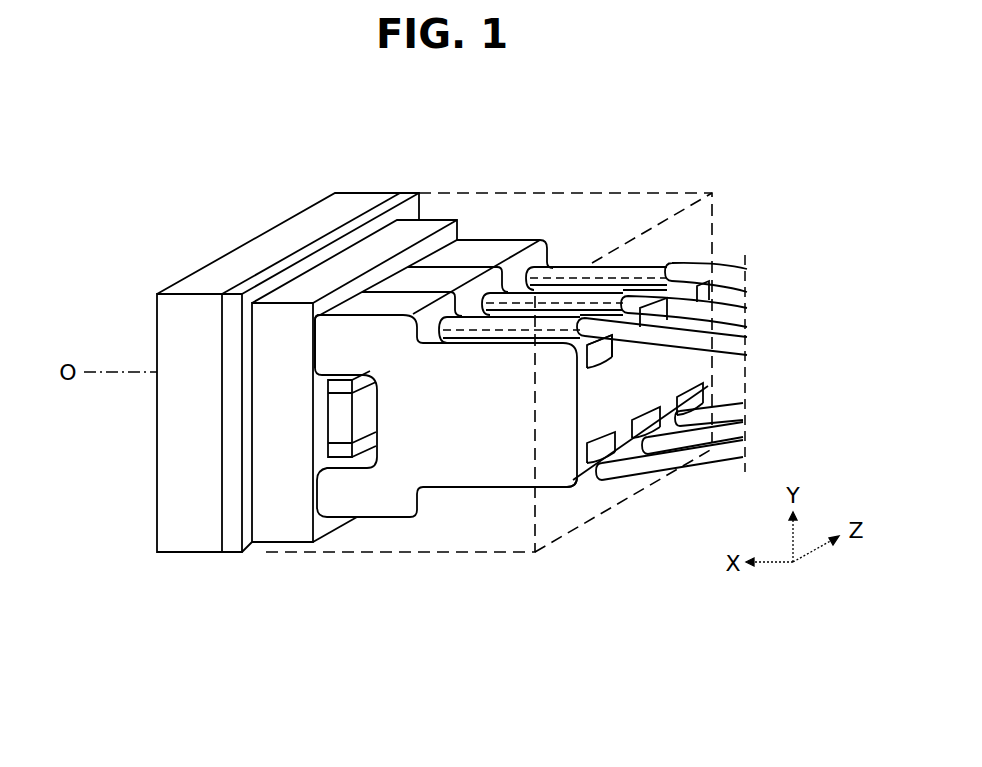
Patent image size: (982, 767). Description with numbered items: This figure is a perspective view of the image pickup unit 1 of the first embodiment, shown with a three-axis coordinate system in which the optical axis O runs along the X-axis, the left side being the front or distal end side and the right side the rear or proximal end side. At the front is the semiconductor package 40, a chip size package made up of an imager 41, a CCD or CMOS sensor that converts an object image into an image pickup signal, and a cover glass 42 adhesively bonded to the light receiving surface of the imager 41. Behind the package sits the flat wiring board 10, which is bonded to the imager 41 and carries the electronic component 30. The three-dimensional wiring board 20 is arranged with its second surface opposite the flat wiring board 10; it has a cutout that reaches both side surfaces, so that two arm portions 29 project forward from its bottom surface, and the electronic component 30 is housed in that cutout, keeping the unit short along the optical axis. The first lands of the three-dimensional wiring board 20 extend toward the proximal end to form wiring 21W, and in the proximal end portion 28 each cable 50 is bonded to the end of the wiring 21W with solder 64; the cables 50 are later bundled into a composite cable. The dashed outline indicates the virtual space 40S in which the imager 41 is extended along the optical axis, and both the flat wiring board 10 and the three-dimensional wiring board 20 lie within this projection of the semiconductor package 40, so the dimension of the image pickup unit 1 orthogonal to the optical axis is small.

The image pickup unit 1 is at (782, 148).
The flat wiring board 10 is at (457, 240).
The three-dimensional wiring board 20 is at (537, 242).
The wiring 21W is at (507, 240).
The proximal end portion 28 is at (487, 489).
The arm portion 29 is at (311, 350).
The electronic component 30 is at (355, 413).
The semiconductor package 40 is at (427, 134).
The virtual space 40S is at (565, 506).
The imager 41 is at (410, 193).
The cover glass 42 is at (363, 193).
The cable 50 is at (727, 262).
The solder 64 is at (640, 265).